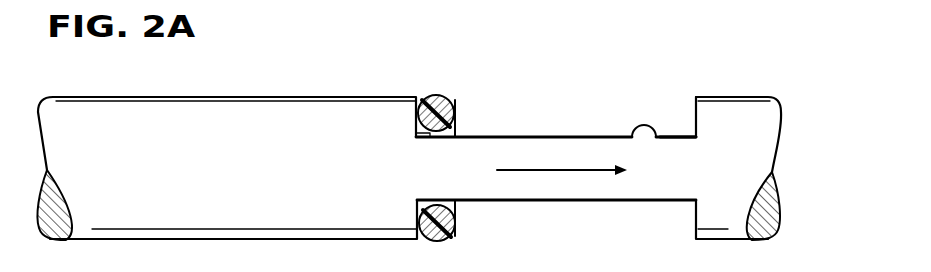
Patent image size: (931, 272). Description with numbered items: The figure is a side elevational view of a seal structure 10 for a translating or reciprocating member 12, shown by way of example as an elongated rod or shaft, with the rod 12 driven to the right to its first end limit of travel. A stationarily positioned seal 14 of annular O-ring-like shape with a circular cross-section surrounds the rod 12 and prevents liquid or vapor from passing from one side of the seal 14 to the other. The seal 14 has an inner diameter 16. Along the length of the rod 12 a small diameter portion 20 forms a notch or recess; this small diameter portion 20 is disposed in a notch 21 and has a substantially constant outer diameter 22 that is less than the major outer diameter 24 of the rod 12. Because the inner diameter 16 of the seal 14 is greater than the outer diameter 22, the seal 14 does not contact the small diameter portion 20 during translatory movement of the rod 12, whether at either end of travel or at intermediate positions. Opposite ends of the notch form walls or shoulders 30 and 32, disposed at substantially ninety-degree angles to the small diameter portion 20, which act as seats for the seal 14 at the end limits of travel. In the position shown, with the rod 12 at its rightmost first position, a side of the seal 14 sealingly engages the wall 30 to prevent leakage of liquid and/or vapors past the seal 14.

The seal structure 10 is at (313, 62).
The translating or reciprocating member 12 is at (739, 88).
The seal 14 is at (448, 80).
The inner diameter 16 is at (447, 130).
The small diameter portion 20 is at (580, 72).
The notch 21 is at (676, 115).
The outer diameter 22 is at (653, 129).
The major outer diameter 24 is at (271, 97).
The wall 30 is at (428, 138).
The wall 32 is at (694, 106).